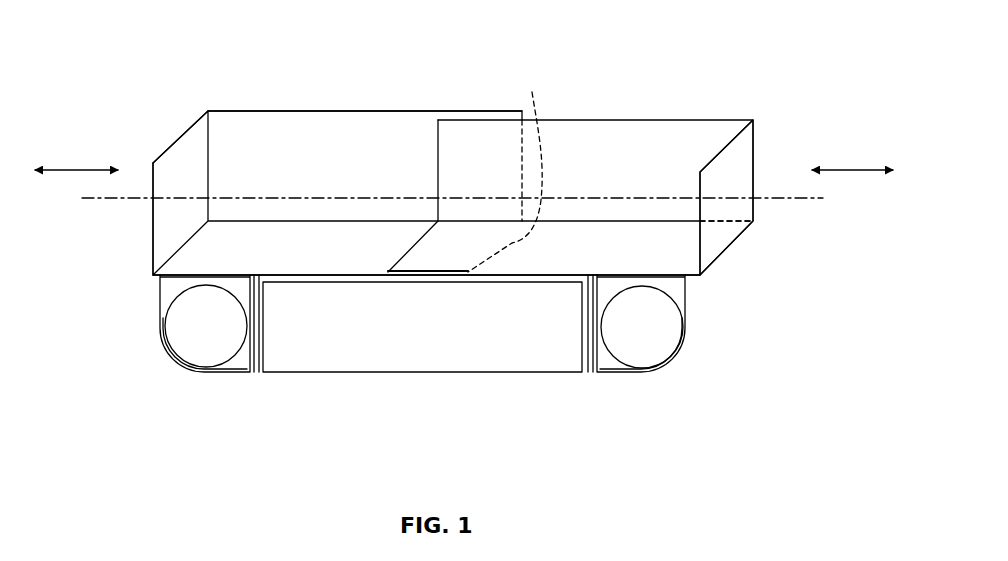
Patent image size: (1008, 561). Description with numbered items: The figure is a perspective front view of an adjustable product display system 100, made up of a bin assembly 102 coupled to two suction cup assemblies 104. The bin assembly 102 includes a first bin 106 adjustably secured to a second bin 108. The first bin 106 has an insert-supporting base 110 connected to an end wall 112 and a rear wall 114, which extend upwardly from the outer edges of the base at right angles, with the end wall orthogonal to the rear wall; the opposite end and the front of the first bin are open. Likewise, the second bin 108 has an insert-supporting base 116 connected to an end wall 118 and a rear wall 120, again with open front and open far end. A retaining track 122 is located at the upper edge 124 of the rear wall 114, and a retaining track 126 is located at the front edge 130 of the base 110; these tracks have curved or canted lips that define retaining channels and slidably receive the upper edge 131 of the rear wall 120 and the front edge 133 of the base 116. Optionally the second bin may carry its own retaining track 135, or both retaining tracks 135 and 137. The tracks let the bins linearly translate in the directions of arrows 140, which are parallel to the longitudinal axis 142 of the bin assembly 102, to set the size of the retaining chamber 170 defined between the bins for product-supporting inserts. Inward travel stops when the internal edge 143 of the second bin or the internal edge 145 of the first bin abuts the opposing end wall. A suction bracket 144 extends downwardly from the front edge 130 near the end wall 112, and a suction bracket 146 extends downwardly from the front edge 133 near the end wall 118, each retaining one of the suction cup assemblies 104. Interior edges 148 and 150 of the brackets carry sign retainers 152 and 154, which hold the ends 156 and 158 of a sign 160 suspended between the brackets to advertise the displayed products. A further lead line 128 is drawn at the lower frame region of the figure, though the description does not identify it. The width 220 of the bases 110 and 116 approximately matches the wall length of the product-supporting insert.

The adjustable product display system 100 is at (195, 78).
The bin assembly 102 is at (668, 118).
The suction cup assemblies 104 is at (200, 365).
The first bin 106 is at (181, 135).
The second bin 108 is at (735, 162).
The insert-supporting base 110 is at (197, 258).
The end wall 112 is at (152, 228).
The rear wall 114 is at (320, 127).
The insert-supporting base 116 is at (690, 258).
The end wall 118 is at (745, 208).
The rear wall 120 is at (587, 133).
The retaining track 122 is at (410, 111).
The upper edge 124 is at (377, 111).
The retaining track 126 is at (377, 277).
The lower frame member 128 is at (350, 277).
The front edge 130 is at (313, 275).
The upper edge 131 is at (623, 118).
The front edge 133 is at (517, 282).
The retaining track 135 is at (475, 282).
The retaining track 137 is at (572, 111).
The arrows 140 is at (68, 172).
The longitudinal axis 142 is at (823, 200).
The internal edge 143 is at (416, 242).
The suction bracket 144 is at (160, 300).
The internal edge 145 is at (512, 167).
The suction bracket 146 is at (687, 300).
The interior edge 148 is at (268, 305).
The interior edge 150 is at (590, 320).
The sign retainer 152 is at (255, 310).
The sign retainer 154 is at (593, 297).
The end 156 is at (262, 348).
The end 158 is at (582, 310).
The sign 160 is at (397, 357).
The retaining chamber 170 is at (278, 128).
The width 220 is at (287, 222).